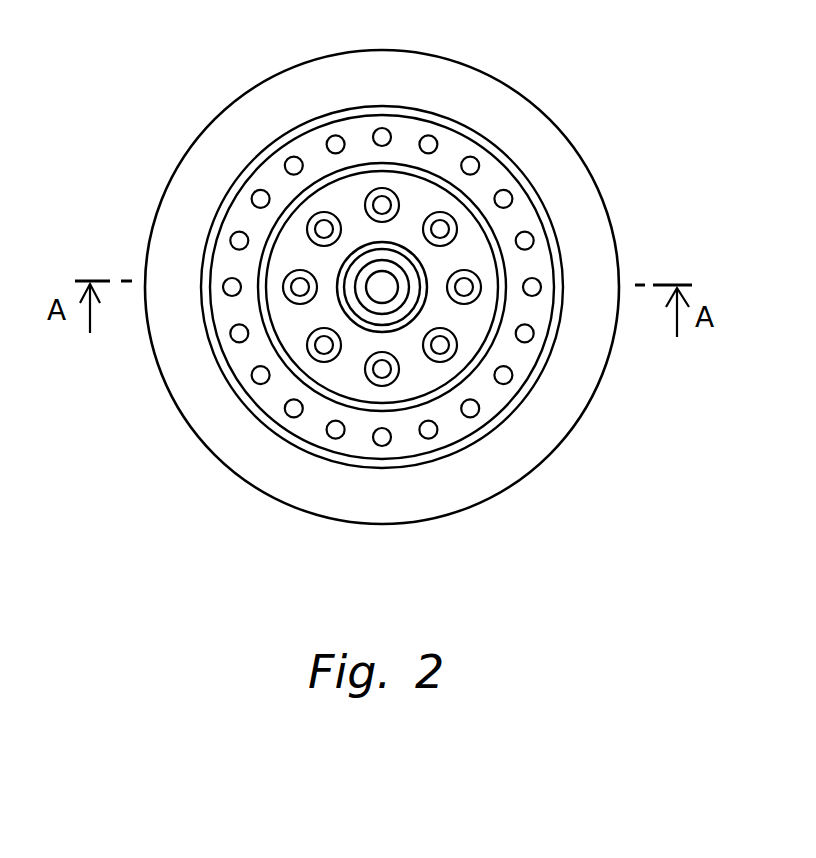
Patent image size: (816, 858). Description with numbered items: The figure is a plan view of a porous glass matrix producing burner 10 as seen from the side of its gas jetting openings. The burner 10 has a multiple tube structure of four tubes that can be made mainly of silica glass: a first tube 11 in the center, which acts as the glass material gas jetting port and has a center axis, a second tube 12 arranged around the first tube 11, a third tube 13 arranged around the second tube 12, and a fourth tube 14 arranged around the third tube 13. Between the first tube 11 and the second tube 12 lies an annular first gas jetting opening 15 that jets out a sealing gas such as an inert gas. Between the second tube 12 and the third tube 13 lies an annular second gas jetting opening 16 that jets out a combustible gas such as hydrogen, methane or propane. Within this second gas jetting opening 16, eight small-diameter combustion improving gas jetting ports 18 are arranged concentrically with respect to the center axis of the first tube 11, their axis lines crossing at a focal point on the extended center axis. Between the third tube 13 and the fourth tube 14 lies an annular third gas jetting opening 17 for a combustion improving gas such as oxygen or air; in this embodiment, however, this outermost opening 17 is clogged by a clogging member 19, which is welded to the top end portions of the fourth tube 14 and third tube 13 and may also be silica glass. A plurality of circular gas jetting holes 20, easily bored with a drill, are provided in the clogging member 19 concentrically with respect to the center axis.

The porous glass matrix producing burner 10 is at (185, 82).
The first tube 11 is at (407, 288).
The second tube 12 is at (338, 293).
The third tube 13 is at (267, 240).
The fourth tube 14 is at (205, 258).
The first gas jetting opening 15 is at (392, 255).
The second gas jetting opening 16 is at (402, 183).
The third gas jetting opening 17 is at (263, 173).
The small-diameter combustion improving gas jetting ports 18 is at (365, 372).
The clogging member 19 is at (527, 222).
The gas jetting holes 20 is at (435, 433).